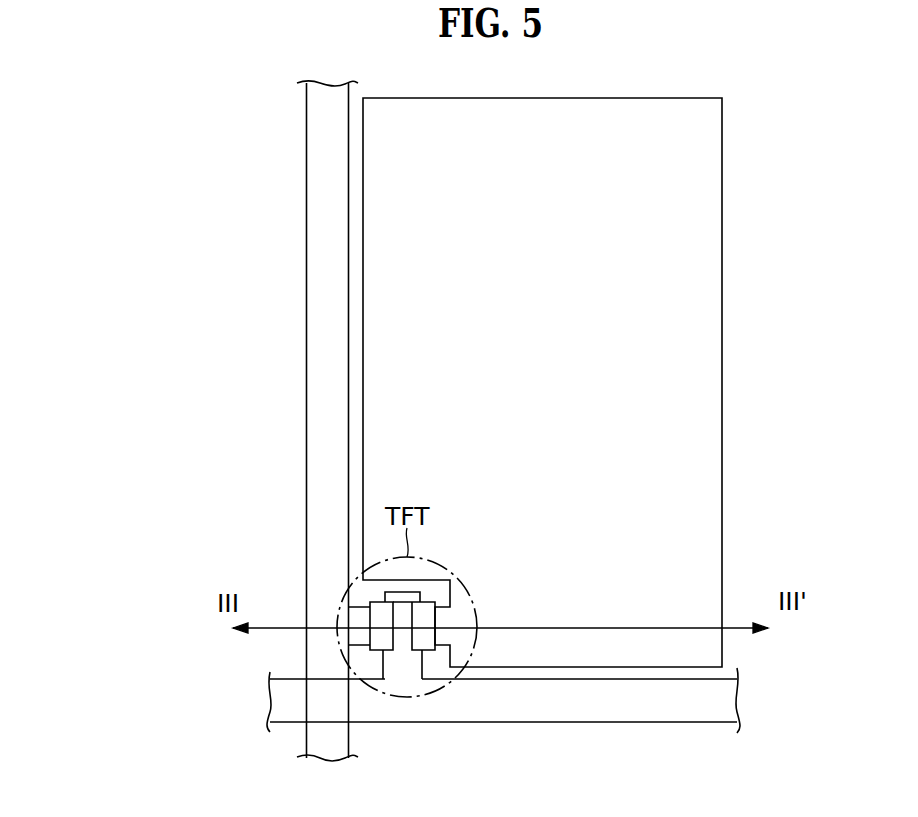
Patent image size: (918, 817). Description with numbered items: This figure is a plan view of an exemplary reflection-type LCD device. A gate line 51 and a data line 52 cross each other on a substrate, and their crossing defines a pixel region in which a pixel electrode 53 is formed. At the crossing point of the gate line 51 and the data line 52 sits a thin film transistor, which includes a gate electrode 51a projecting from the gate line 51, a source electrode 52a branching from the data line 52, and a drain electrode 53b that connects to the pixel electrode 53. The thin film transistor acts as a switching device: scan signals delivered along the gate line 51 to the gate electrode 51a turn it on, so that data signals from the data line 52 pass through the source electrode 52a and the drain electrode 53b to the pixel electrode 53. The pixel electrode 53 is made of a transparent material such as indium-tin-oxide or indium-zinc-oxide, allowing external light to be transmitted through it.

The gate line 51 is at (640, 710).
The gate electrode 51a is at (412, 670).
The data line 52 is at (318, 318).
The source electrode 52a is at (348, 613).
The pixel electrode 53 is at (713, 383).
The drain electrode 53b is at (445, 617).